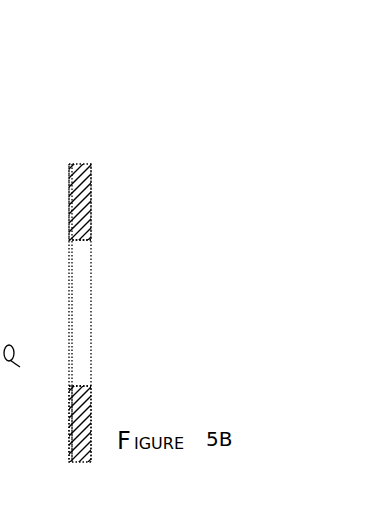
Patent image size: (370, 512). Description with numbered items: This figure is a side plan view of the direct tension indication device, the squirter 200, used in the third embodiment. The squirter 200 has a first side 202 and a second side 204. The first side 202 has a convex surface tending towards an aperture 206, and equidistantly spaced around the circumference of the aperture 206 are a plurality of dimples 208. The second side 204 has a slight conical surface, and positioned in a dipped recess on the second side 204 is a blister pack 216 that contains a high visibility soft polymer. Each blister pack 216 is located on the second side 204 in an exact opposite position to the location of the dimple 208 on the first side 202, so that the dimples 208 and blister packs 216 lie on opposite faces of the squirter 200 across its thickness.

The squirter 200 is at (161, 184).
The first side 202 is at (93, 165).
The second side 204 is at (70, 168).
The aperture 206 is at (93, 308).
The dimples 208 is at (93, 216).
The blister pack 216 is at (72, 417).